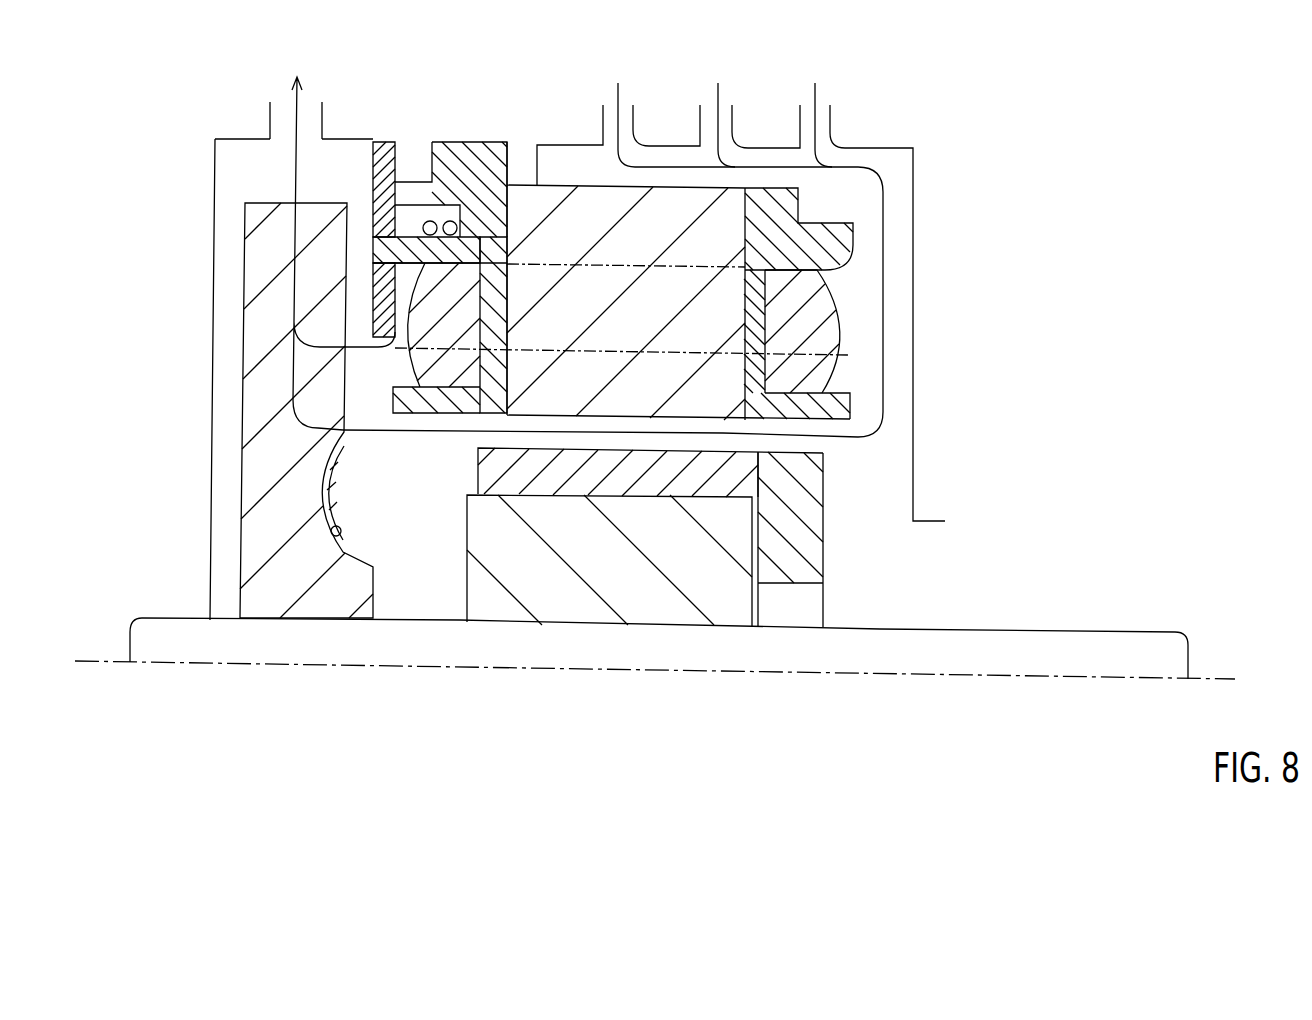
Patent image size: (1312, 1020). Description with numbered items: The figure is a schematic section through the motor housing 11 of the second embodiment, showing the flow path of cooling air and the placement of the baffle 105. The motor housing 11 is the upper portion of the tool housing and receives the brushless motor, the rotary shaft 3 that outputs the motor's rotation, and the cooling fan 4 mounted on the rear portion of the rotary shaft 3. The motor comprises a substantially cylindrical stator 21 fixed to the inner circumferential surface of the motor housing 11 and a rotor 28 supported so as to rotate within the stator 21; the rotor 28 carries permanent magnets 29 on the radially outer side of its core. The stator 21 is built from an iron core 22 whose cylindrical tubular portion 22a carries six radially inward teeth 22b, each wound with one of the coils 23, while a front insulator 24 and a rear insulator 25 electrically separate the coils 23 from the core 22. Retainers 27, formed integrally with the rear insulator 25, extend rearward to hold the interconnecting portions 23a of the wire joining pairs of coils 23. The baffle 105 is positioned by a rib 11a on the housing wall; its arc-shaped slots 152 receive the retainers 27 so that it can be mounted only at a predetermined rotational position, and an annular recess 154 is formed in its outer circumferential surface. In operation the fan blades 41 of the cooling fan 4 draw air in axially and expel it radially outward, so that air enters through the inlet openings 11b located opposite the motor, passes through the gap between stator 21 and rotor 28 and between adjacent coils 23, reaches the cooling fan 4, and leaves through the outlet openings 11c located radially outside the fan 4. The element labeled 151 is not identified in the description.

The rotary shaft 3 is at (214, 640).
The cooling fan 4 is at (222, 536).
The fan blades 41 is at (263, 458).
The motor housing 11 is at (233, 108).
The rib 11a is at (407, 163).
The inlet openings 11b is at (643, 128).
The outlet openings 11c is at (268, 118).
The stator 21 is at (575, 174).
The iron core 22 is at (673, 176).
The cylindrical tubular portion 22a is at (697, 242).
The teeth 22b is at (700, 388).
The coils 23 is at (803, 297).
The interconnecting portion 23a is at (446, 221).
The front insulator 24 is at (753, 338).
The rear insulator 25 is at (493, 307).
The retainers 27 is at (385, 215).
The rotor 28 is at (457, 584).
The permanent magnets 29 is at (633, 470).
The baffle 105 is at (363, 298).
The air passage 151 is at (320, 347).
The arc-shaped slots 152 is at (375, 243).
The annular recess 154 is at (417, 177).